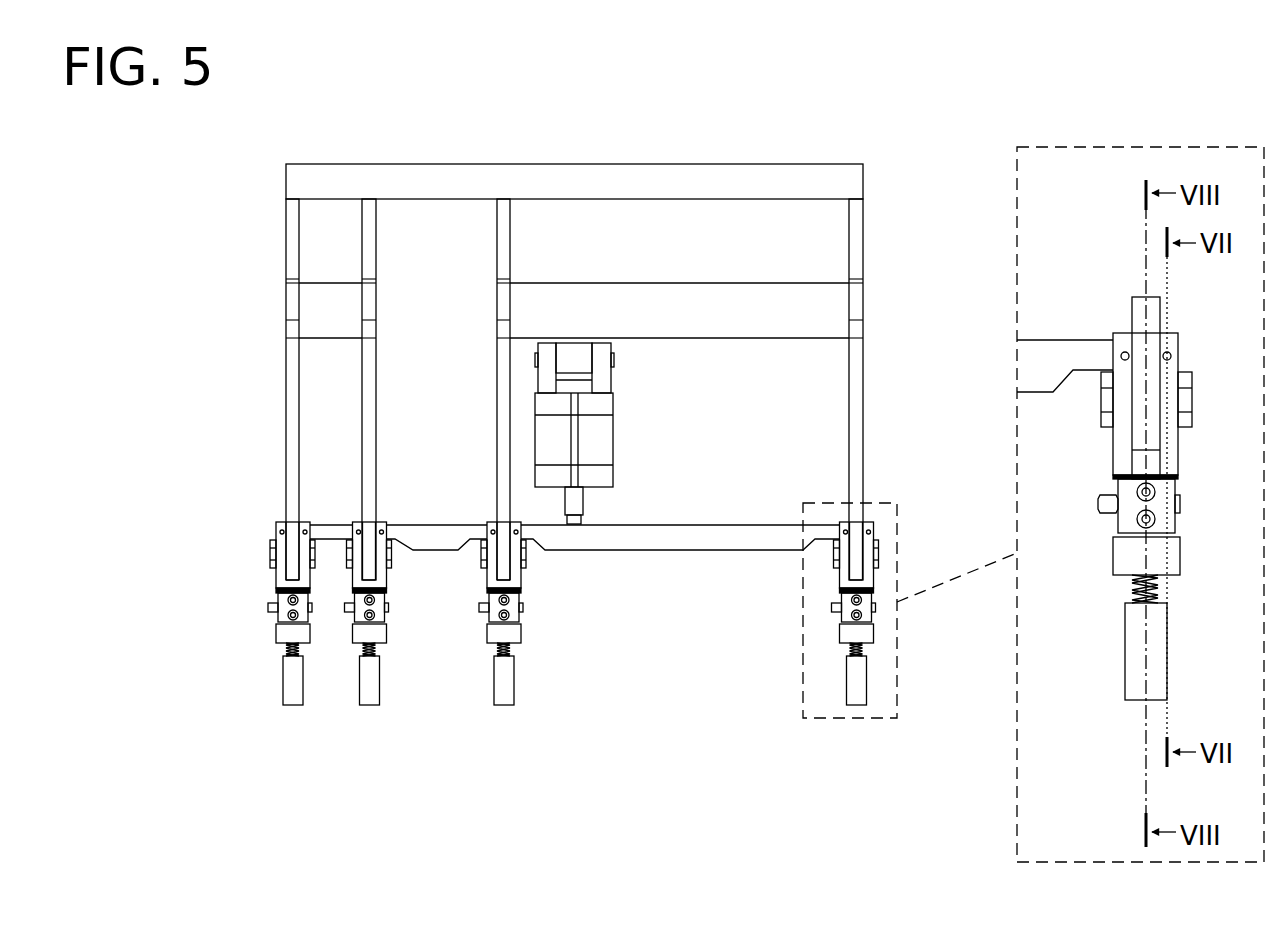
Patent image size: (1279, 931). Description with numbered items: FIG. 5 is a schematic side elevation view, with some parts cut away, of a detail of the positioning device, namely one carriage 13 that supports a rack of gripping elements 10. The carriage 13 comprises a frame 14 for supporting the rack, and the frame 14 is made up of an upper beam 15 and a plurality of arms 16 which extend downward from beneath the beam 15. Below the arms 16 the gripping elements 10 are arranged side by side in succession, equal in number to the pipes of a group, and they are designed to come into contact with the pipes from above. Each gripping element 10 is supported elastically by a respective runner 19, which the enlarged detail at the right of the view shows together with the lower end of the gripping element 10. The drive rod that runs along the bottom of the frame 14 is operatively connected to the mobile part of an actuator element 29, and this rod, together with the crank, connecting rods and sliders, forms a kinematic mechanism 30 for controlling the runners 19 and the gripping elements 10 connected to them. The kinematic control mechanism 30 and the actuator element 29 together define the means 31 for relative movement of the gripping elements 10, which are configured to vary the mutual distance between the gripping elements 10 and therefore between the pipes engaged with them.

The gripping element 10 is at (1119, 643).
The carriage 13 is at (584, 107).
The frame 14 is at (795, 155).
The upper beam 15 is at (480, 160).
The arm 16 is at (358, 395).
The runner 19 is at (1105, 555).
The actuator element 29 is at (617, 437).
The kinematic mechanism 30 is at (585, 641).
The means for relative movement of the gripping elements 31 is at (640, 403).